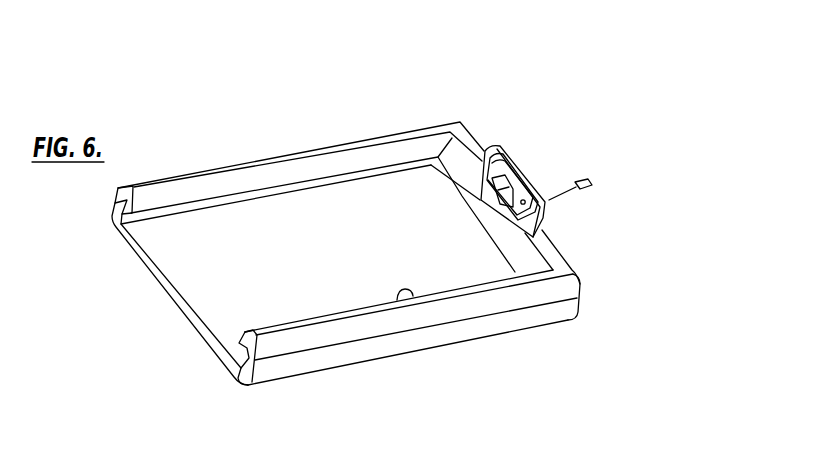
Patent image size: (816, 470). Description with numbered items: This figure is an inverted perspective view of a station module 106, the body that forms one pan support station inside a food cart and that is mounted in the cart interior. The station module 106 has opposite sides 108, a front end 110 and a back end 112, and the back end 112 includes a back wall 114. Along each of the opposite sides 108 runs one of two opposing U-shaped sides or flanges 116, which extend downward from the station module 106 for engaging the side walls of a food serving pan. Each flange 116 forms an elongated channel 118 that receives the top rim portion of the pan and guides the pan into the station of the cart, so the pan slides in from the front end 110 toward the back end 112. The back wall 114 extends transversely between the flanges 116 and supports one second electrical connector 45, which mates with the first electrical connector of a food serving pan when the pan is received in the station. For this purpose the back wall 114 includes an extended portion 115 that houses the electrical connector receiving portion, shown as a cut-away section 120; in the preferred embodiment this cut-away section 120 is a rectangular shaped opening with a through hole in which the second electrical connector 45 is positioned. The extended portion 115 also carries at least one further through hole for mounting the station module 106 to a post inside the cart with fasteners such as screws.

The station module 106 is at (378, 234).
The opposite sides 108 is at (110, 226).
The front end 110 is at (130, 299).
The back end 112 is at (603, 240).
The back wall 114 is at (457, 176).
The extended portion 115 is at (551, 201).
The U-shaped sides or flanges 116 is at (234, 165).
The elongated channel 118 is at (220, 361).
The cut-away section 120 is at (483, 200).
The second electrical connector 45 is at (525, 200).